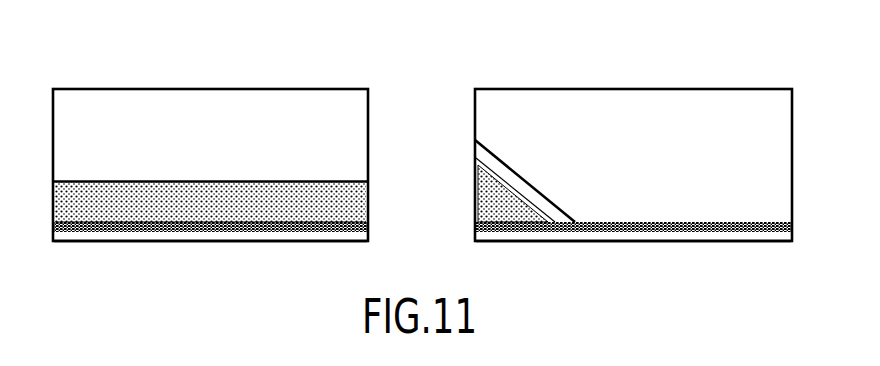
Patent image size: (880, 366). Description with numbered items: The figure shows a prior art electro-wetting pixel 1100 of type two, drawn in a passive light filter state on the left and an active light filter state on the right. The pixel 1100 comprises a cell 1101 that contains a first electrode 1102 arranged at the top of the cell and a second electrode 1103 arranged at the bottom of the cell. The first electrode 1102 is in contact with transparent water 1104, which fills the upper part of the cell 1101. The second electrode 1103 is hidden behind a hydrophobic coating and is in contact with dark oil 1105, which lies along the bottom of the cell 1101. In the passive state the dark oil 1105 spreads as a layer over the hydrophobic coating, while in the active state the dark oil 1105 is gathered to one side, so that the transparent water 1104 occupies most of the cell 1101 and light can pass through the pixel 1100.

The pixel 1100 is at (542, 66).
The cell 1101 is at (792, 182).
The first electrode 1102 is at (588, 86).
The second electrode 1103 is at (651, 233).
The transparent water 1104 is at (72, 120).
The dark oil 1105 is at (68, 198).